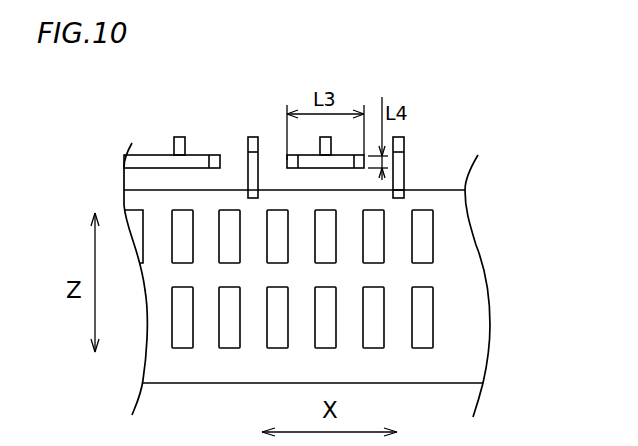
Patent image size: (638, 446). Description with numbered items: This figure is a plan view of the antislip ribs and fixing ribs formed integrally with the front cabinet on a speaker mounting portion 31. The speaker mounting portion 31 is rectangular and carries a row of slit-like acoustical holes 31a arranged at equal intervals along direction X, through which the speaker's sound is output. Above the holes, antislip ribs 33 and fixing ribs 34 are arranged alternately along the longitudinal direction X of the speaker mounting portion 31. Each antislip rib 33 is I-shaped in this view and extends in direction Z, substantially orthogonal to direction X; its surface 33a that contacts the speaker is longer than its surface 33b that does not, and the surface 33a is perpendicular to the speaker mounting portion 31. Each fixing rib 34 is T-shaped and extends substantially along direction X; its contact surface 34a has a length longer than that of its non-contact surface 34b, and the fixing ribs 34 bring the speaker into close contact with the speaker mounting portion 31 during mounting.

The speaker mounting portion 31 is at (490, 313).
The acoustical hole 31a is at (433, 242).
The antislip rib 33 is at (257, 138).
The surface of antislip rib in contact with speaker 33a is at (399, 187).
The surface of antislip rib not in contact with speaker 33b is at (405, 165).
The fixing rib 34 is at (221, 152).
The surface of fixing rib in contact with speaker 34a is at (289, 167).
The surface of fixing rib not in contact with speaker 34b is at (323, 169).